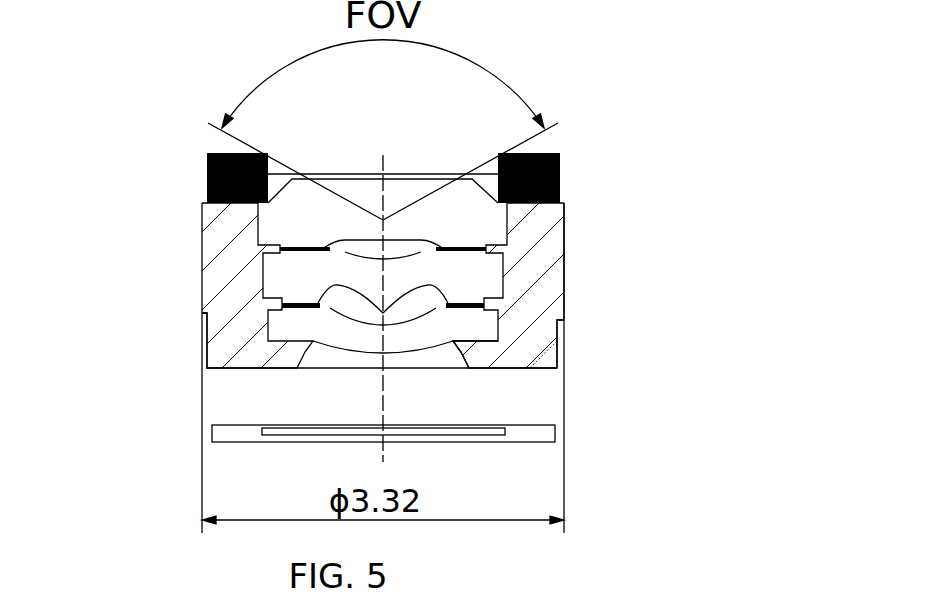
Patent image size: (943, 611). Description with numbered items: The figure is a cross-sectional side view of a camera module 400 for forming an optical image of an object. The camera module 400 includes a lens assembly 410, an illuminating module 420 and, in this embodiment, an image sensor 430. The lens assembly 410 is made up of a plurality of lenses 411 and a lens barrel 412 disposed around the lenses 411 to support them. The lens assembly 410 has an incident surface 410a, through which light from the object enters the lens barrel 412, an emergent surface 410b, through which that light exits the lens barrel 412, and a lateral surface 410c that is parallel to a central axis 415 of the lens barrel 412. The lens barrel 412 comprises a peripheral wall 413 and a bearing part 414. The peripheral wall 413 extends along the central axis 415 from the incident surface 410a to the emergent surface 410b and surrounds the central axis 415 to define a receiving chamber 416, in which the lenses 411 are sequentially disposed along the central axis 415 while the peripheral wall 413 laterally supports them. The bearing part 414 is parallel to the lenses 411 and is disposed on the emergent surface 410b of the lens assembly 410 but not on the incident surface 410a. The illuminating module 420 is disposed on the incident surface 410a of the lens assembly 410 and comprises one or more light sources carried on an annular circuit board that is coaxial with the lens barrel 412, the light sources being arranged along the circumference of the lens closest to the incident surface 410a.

The camera module 400 is at (82, 73).
The lens assembly 410 is at (571, 352).
The incident surface 410a is at (207, 202).
The emergent surface 410b is at (230, 362).
The lateral surface 410c is at (203, 238).
The lenses 411 is at (288, 221).
The lens barrel 412 is at (565, 312).
The peripheral wall 413 is at (540, 257).
The bearing part 414 is at (492, 360).
The central axis 415 is at (383, 168).
The receiving chamber 416 is at (334, 360).
The illuminating module 420 is at (560, 166).
The image sensor 430 is at (525, 437).